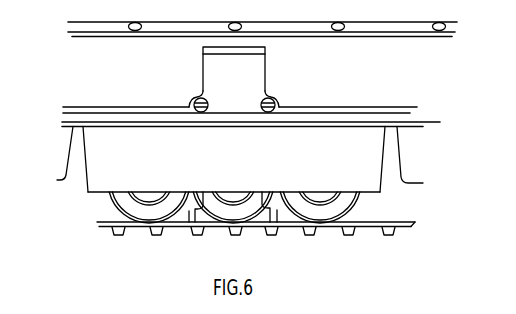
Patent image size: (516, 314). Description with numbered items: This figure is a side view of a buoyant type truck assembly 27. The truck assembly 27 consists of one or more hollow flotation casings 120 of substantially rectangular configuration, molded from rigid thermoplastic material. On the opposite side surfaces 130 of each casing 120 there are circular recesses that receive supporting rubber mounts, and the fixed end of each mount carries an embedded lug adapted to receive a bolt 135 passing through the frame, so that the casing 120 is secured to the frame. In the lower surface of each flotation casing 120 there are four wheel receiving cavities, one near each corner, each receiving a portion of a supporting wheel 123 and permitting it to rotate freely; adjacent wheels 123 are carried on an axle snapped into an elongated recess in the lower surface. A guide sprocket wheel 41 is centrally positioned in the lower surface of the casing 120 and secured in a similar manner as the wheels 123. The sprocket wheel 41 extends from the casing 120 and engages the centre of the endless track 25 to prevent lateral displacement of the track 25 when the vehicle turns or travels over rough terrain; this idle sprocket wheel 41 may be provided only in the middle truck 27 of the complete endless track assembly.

The endless track 25 is at (310, 231).
The truck assembly 27 is at (105, 179).
The guide sprocket wheel 41 is at (274, 197).
The flotation casing 120 is at (352, 132).
The supporting wheel 123 is at (160, 212).
The side surface 130 is at (369, 185).
The bolt 135 is at (263, 100).